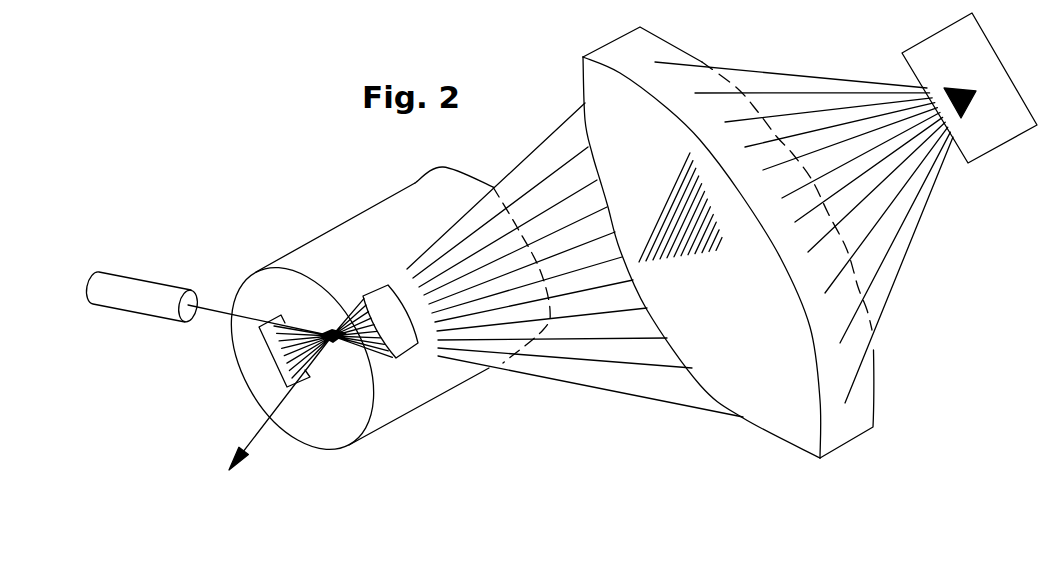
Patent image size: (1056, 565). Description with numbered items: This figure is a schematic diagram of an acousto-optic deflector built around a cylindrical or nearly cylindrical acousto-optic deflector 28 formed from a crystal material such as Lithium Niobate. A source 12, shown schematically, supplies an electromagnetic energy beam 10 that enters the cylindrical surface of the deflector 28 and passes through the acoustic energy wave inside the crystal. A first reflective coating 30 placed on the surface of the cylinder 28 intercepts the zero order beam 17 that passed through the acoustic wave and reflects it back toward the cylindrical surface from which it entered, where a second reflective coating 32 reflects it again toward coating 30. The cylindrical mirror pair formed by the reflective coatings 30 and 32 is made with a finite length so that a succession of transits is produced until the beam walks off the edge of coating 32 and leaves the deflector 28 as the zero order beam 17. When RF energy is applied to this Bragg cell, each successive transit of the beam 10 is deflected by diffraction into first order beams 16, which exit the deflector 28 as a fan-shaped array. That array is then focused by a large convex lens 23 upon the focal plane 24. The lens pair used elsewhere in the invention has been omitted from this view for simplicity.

The electromagnetic energy beam 10 is at (218, 313).
The laser 12 is at (163, 282).
The first order beams 16 is at (582, 385).
The zero order beam 17 is at (257, 435).
The large convex lens 23 is at (865, 430).
The focal plane 24 is at (918, 42).
The cylindrical acousto-optic deflector 28 is at (348, 430).
The first reflective coating 30 is at (407, 353).
The second reflective coating 32 is at (272, 368).